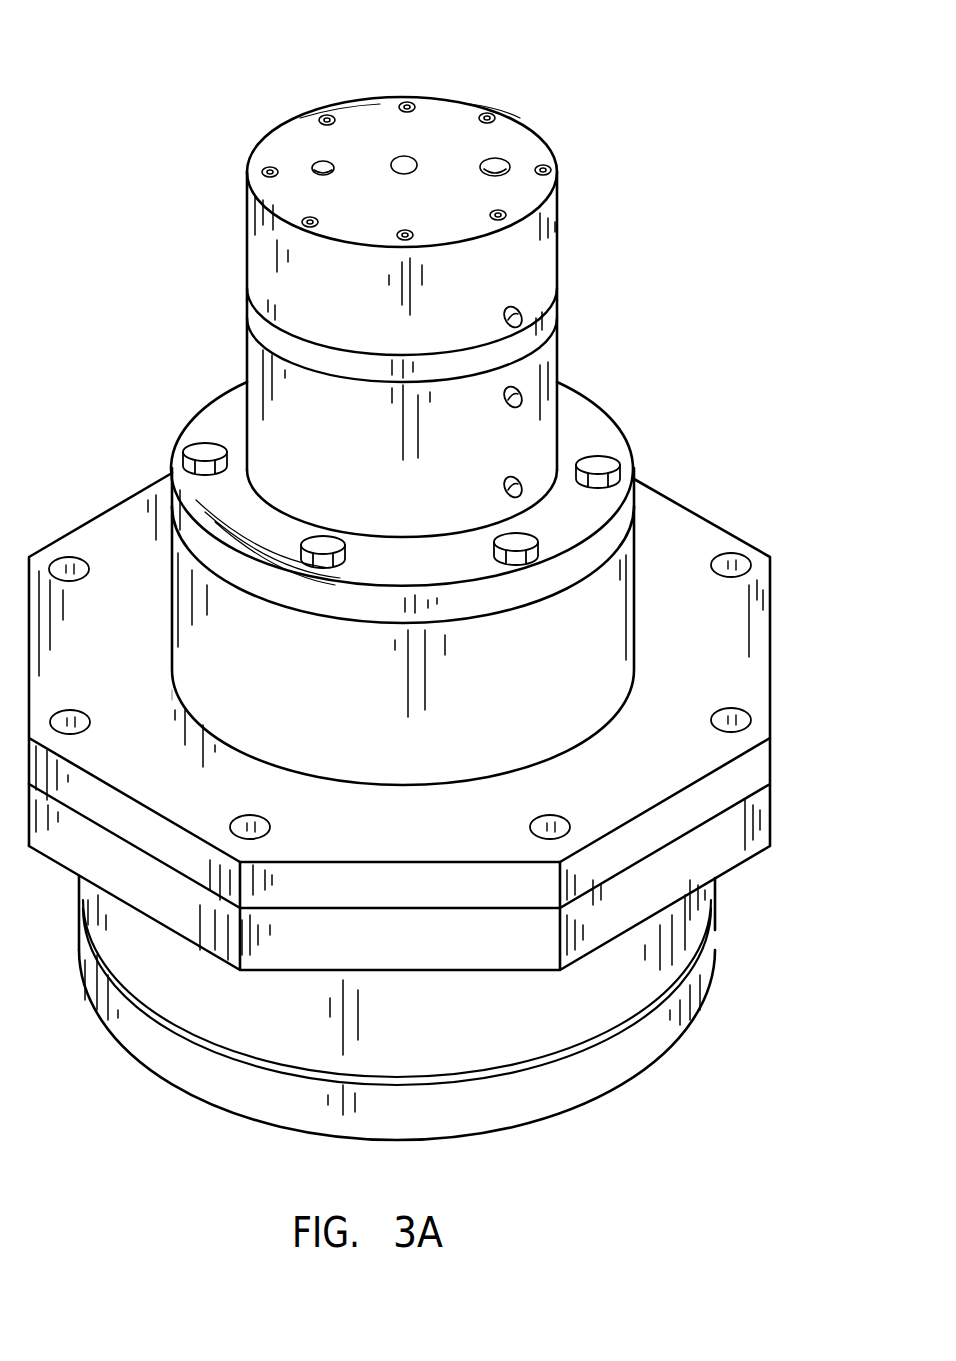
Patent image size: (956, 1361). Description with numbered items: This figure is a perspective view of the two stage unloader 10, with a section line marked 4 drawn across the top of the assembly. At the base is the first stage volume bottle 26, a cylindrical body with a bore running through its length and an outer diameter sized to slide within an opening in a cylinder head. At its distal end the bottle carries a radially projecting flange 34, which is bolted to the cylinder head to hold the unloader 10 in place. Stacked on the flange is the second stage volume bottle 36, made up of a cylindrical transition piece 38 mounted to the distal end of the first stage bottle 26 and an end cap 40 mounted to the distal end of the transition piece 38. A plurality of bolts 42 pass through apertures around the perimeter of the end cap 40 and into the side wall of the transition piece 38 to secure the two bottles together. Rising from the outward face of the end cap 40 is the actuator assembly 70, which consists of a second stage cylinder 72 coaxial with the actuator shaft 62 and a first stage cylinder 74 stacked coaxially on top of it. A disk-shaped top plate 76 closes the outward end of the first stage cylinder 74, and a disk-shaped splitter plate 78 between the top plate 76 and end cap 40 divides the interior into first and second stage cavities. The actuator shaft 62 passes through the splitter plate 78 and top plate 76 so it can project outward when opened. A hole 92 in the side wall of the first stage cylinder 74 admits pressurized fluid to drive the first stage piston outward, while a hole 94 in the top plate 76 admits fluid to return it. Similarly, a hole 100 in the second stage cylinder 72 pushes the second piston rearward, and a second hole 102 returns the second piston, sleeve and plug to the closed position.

The two stage unloader 10 is at (556, 124).
The first stage volume bottle 26 is at (678, 918).
The radially projecting flange 34 is at (687, 768).
The second stage volume bottle 36 is at (636, 556).
The transition piece 38 is at (603, 614).
The end cap 40 is at (592, 428).
The bolts 42 is at (320, 546).
The actuator shaft 62 is at (405, 165).
The actuator assembly 70 is at (580, 316).
The second stage cylinder 72 is at (280, 395).
The first stage cylinder 74 is at (268, 268).
The top plate 76 is at (380, 125).
The splitter plate 78 is at (268, 320).
The hole 92 is at (520, 318).
The hole 94 is at (322, 168).
The hole 100 is at (522, 486).
The second hole 102 is at (520, 395).
The section line 4- 4 is at (382, 170).